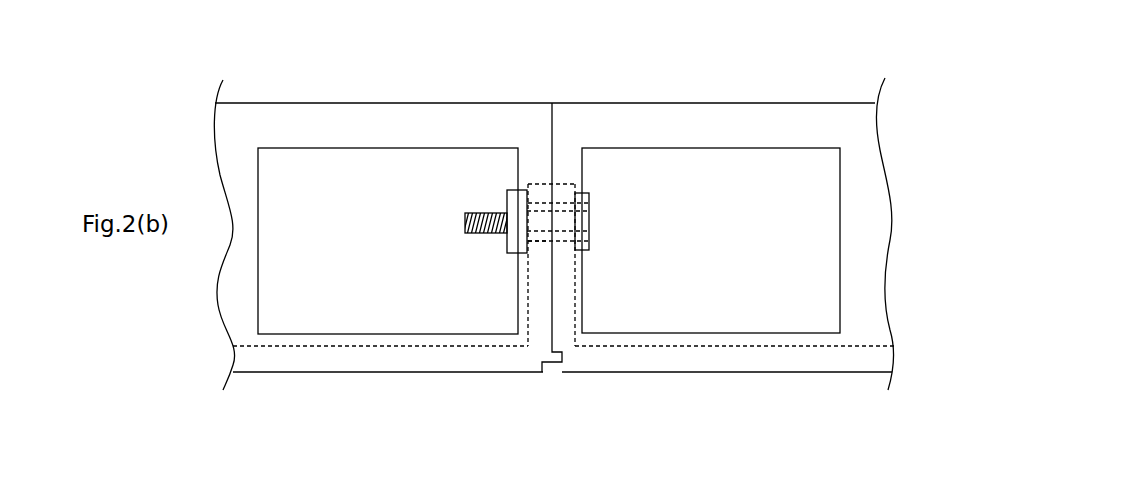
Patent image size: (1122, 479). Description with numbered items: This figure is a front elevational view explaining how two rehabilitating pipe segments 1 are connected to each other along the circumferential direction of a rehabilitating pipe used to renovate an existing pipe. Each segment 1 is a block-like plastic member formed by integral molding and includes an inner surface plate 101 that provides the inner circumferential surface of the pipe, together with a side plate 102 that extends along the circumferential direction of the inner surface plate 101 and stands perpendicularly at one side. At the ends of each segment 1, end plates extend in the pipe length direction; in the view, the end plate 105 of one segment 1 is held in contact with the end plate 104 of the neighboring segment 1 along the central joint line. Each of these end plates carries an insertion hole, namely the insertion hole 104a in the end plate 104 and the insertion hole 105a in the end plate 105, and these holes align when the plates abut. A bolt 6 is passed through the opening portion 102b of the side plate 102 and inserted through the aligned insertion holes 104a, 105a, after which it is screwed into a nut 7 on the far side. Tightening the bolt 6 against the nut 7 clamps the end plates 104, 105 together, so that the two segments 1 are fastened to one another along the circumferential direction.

The rehabilitating pipe segment 1 is at (355, 88).
The bolt 6 is at (590, 203).
The nut 7 is at (507, 192).
The inner surface plate 101 is at (276, 362).
The side plate 102 is at (448, 103).
The opening portion 102b is at (348, 312).
The end plate 104 is at (567, 184).
The insertion hole 104a is at (572, 240).
The end plate 105 is at (544, 184).
The insertion hole 105a is at (537, 241).